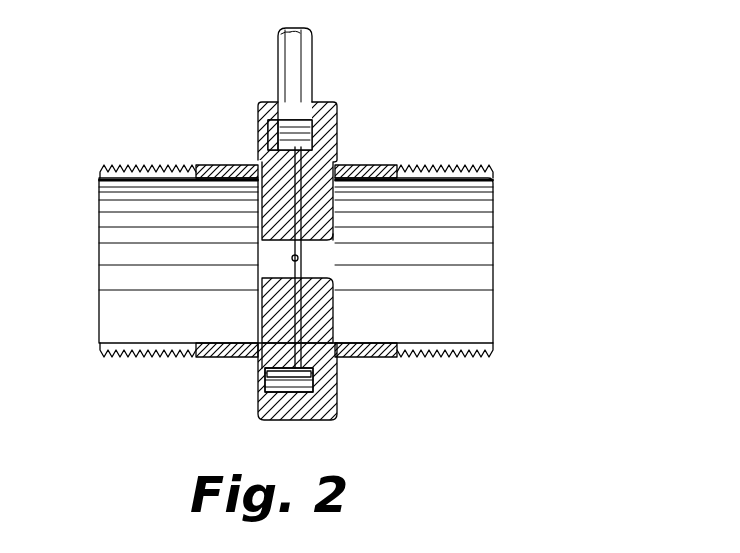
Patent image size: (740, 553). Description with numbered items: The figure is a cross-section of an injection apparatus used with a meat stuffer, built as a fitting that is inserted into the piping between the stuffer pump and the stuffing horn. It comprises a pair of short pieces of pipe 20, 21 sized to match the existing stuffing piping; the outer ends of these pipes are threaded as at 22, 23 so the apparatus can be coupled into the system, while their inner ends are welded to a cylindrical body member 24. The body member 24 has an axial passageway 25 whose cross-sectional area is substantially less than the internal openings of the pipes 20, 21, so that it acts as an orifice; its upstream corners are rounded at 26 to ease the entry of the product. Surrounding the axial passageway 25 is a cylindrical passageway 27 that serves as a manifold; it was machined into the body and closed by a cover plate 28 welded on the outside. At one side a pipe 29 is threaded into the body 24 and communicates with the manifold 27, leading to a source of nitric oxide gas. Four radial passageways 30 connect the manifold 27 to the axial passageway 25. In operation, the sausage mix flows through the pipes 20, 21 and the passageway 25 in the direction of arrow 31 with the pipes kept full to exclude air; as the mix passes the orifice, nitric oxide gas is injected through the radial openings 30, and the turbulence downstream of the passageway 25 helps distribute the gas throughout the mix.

The pipe 20 is at (497, 192).
The pipe 21 is at (98, 308).
The threaded end 22 is at (433, 167).
The threaded end 23 is at (155, 358).
The cylindrical body member 24 is at (258, 408).
The axial passageway 25 is at (334, 252).
The rounded upstream corners 26 is at (334, 277).
The cylindrical passageway 27 is at (335, 388).
The cover plate 28 is at (262, 377).
The pipe 29 is at (312, 47).
The radial passageways 30 is at (300, 228).
The arrow 31 is at (502, 257).